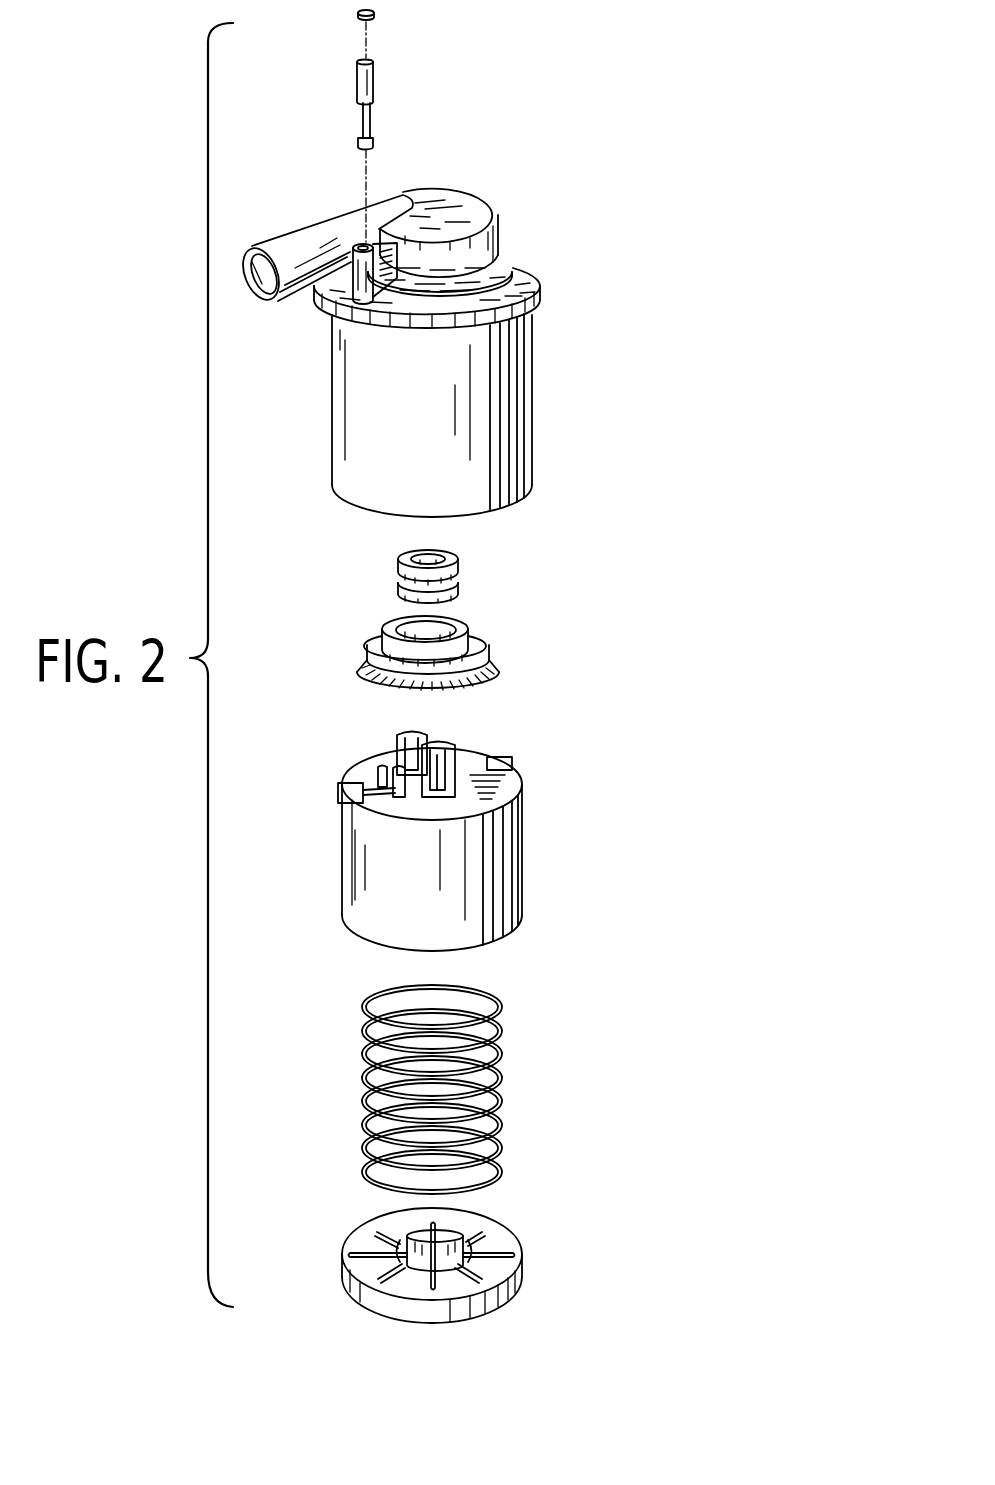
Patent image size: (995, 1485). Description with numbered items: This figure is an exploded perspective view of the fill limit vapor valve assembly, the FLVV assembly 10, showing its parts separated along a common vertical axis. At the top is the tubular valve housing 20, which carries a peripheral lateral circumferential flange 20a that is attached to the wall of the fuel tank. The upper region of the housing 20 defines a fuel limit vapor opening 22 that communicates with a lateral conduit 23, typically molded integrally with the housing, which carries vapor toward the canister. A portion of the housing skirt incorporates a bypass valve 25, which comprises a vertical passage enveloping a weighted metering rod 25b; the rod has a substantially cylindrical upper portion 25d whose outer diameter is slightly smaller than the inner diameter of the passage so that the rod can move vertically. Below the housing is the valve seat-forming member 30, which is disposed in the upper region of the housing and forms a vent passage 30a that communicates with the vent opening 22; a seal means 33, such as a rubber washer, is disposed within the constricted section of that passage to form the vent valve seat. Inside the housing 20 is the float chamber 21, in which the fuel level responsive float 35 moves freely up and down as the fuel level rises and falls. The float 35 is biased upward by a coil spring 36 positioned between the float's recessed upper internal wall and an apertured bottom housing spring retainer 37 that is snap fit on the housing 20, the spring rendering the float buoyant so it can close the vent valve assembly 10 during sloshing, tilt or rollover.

The FLVV assembly 10 is at (593, 90).
The tubular valve housing 20 is at (535, 408).
The peripheral lateral circumferential flange 20a is at (541, 281).
The float chamber 21 is at (498, 842).
The fuel limit vapor opening 22 is at (500, 243).
The lateral conduit 23 is at (324, 234).
The bypass valve 25 is at (375, 273).
The weighted metering rod 25b is at (376, 85).
The cylindrical upper portion 25d is at (376, 15).
The valve seat-forming member 30 is at (498, 648).
The vent passage 30a is at (448, 623).
The seal means 33 is at (460, 555).
The float 35 is at (502, 841).
The coil spring 36 is at (500, 1058).
The bottom housing spring retainer 37 is at (518, 1238).